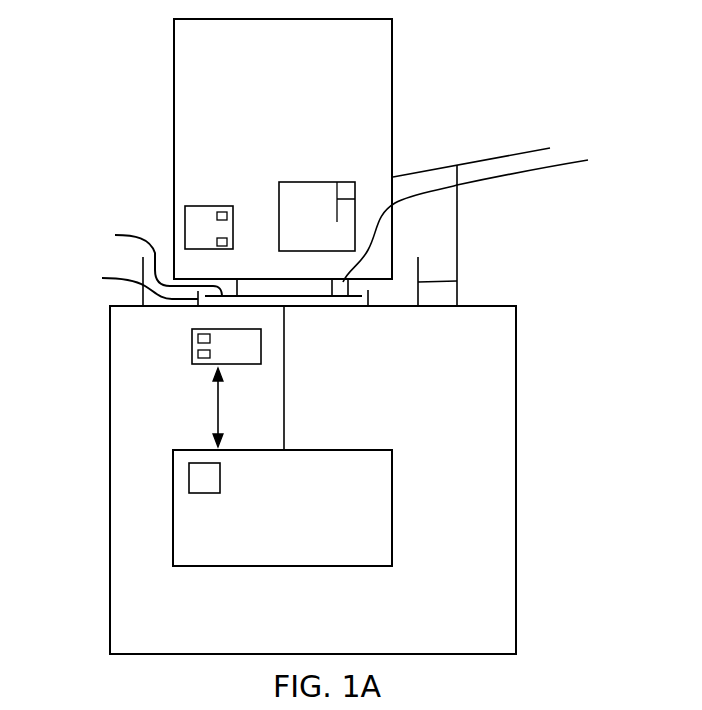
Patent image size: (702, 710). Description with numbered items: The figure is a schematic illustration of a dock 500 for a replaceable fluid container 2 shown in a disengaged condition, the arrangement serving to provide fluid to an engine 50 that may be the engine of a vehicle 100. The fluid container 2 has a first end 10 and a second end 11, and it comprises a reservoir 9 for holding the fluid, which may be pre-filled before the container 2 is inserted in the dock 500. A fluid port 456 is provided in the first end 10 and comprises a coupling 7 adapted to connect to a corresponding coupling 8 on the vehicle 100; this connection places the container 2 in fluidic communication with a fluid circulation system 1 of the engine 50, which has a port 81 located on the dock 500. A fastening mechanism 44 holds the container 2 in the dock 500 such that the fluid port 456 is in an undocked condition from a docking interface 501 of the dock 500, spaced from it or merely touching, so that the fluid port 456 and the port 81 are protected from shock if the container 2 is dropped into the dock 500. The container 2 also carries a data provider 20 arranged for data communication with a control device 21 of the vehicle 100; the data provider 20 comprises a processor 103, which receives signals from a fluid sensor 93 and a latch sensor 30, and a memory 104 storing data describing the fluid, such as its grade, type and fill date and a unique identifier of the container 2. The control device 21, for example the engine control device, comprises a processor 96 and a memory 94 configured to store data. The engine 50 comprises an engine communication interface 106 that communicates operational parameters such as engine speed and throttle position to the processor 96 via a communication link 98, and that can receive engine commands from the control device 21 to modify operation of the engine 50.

The fluid circulation system 1 is at (284, 423).
The fluid container 2 is at (280, 108).
The coupling 7 is at (160, 259).
The coupling 8 is at (140, 282).
The reservoir 9 is at (302, 226).
The first end 10 is at (397, 257).
The second end 11 is at (392, 43).
The data provider 20 is at (198, 206).
The control device 21 is at (232, 364).
The latch sensor 30 is at (480, 215).
The fastening mechanism 44 is at (497, 238).
The engine 50 is at (278, 525).
The port 81 is at (286, 307).
The fluid sensor 93 is at (355, 199).
The memory 94 is at (192, 353).
The processor 96 is at (192, 336).
The communication link 98 is at (217, 407).
The vehicle 100 is at (421, 391).
The processor 103 is at (223, 211).
The memory 104 is at (228, 241).
The engine communication interface 106 is at (193, 478).
The fluid port 456 is at (267, 286).
The dock 500 is at (457, 281).
The docking interface 501 is at (358, 305).